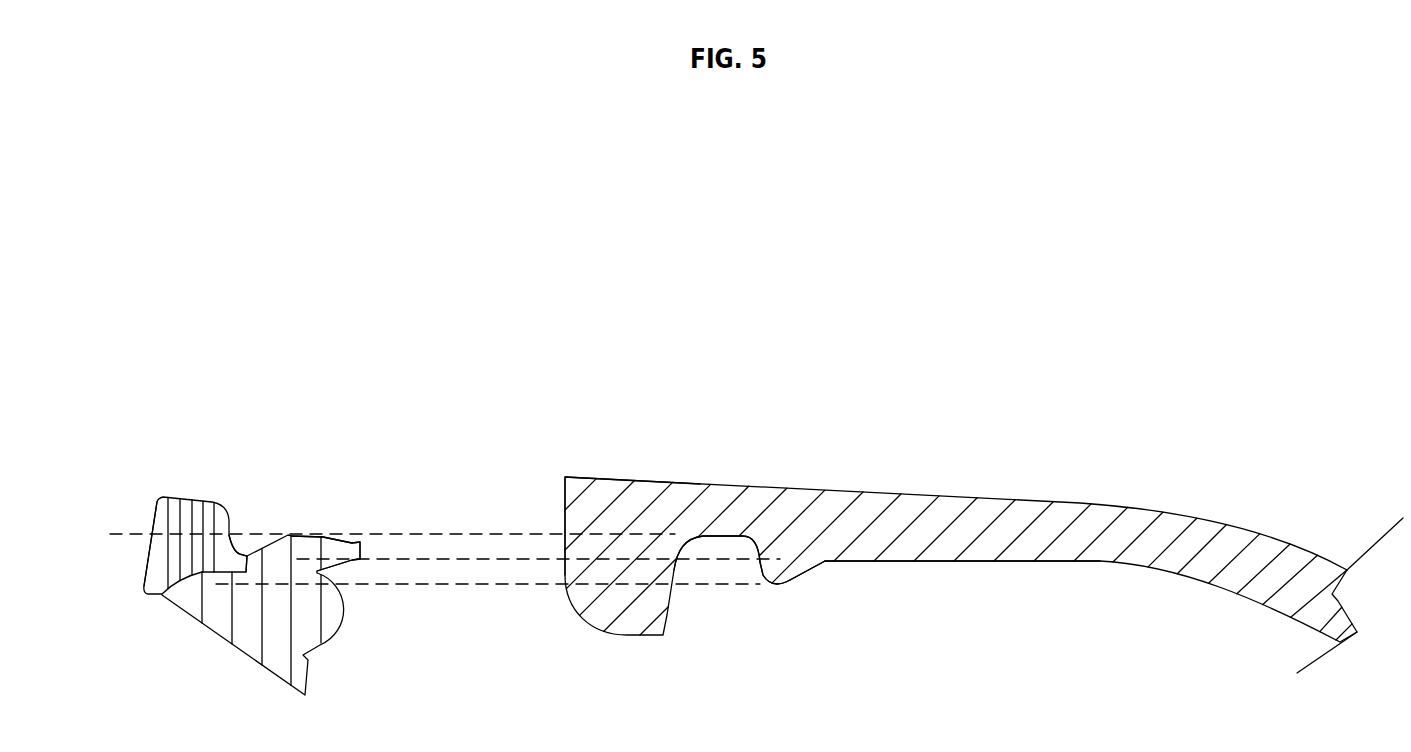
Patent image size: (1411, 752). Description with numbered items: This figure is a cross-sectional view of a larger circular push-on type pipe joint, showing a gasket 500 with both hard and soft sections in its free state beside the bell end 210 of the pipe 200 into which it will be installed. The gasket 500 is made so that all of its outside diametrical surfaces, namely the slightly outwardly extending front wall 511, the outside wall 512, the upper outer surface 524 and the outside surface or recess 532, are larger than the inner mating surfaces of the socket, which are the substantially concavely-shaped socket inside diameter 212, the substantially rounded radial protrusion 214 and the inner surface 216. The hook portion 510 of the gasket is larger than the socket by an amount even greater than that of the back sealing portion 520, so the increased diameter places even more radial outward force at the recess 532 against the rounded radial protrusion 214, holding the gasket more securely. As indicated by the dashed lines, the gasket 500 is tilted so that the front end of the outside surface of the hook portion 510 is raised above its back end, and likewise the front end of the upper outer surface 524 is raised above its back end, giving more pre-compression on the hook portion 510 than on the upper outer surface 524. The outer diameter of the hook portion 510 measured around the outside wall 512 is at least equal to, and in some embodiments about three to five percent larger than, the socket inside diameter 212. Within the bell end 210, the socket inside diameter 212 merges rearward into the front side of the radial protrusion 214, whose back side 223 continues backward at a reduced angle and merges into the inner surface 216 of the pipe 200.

The pipe 200 is at (623, 418).
The bell end 210 is at (565, 475).
The substantially, concavely-shaped socket inside diameter 212 is at (727, 535).
The substantially rounded radial protrusion 214 is at (778, 585).
The inner surface 216 is at (858, 562).
The back side 223 is at (808, 572).
The gasket 500 is at (148, 485).
The hook portion 510 is at (158, 562).
The front wall 511 is at (150, 543).
The outside wall 512 is at (194, 499).
The back sealing portion 520 is at (308, 618).
The upper outer surface 524 is at (325, 537).
The recess 532 is at (240, 554).